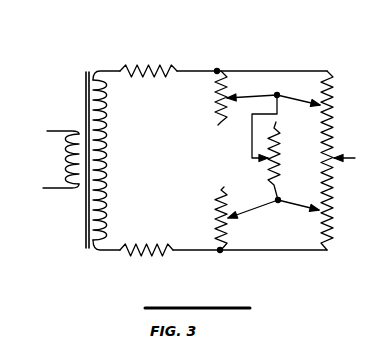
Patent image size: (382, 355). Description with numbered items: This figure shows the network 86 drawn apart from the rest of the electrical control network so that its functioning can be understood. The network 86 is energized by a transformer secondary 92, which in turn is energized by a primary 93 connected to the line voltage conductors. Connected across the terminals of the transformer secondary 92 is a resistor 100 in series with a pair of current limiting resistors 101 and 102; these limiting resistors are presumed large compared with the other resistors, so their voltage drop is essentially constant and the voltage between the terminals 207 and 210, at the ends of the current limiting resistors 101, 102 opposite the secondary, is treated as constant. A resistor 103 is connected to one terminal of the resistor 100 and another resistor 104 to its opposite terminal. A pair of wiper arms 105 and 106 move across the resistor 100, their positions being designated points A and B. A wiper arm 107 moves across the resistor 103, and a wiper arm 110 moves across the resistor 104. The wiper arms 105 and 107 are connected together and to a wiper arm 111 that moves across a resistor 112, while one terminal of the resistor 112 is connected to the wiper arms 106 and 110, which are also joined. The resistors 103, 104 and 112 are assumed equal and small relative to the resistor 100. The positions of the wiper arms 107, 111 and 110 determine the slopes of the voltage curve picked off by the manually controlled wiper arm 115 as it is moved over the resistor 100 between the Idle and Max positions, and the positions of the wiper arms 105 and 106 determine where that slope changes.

The network 86 is at (243, 36).
The transformer secondary 92 is at (107, 155).
The primary 93 is at (68, 153).
The resistor 100 is at (332, 187).
The current limiting resistor 101 is at (147, 65).
The current limiting resistor 102 is at (140, 256).
The resistor 103 is at (218, 117).
The resistor 104 is at (217, 207).
The wiper arm 105 is at (296, 100).
The wiper arm 106 is at (298, 203).
The wiper arm 107 is at (229, 97).
The wiper arm 110 is at (261, 208).
The wiper arm 111 is at (250, 143).
The resistor 112 is at (280, 158).
The wiper arm 115 is at (343, 158).
The terminal 207 is at (217, 70).
The terminal 210 is at (220, 250).